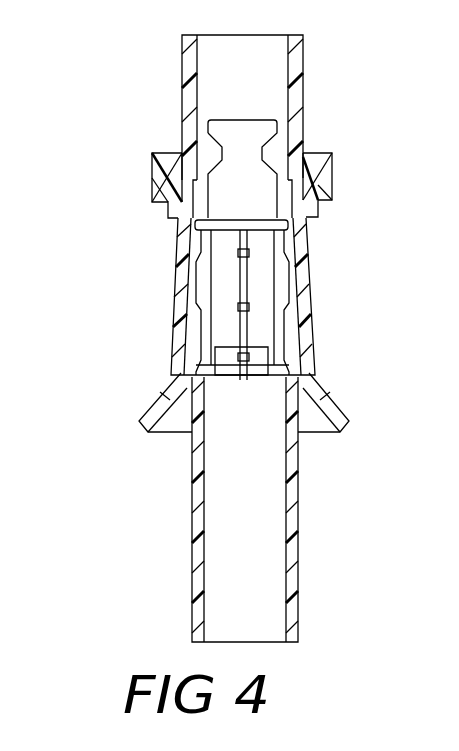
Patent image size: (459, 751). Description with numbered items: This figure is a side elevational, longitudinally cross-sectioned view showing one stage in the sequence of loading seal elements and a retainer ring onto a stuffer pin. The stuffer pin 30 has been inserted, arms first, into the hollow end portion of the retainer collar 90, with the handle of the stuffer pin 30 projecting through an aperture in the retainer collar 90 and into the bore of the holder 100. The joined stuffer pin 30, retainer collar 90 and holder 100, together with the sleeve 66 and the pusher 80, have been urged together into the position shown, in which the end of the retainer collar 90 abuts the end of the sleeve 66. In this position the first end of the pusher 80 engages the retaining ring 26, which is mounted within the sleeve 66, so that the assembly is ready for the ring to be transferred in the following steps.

The holder 100 is at (182, 61).
The retainer collar 90 is at (173, 182).
The stuffer pin 30 is at (233, 237).
The retaining ring 26 is at (197, 363).
The sleeve 66 is at (156, 398).
The pusher 80 is at (192, 506).